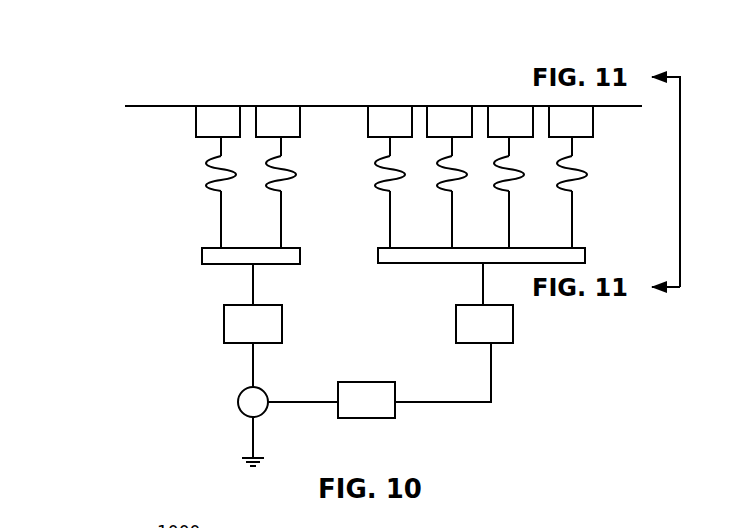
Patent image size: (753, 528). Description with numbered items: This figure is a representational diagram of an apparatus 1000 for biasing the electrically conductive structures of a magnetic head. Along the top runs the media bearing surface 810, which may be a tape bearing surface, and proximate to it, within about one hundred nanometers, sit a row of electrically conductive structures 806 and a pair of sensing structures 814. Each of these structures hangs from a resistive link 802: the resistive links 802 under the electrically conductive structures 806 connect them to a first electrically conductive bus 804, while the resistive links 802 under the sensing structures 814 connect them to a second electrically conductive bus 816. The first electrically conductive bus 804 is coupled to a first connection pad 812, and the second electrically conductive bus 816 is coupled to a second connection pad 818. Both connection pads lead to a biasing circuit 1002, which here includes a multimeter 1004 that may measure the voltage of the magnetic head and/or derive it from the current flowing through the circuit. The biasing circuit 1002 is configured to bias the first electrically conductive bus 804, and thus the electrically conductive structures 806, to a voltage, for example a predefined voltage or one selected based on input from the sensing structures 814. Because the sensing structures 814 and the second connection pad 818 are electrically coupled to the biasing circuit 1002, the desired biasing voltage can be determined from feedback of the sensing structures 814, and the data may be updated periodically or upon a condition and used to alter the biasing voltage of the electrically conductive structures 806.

The apparatus 1000 is at (90, 73).
The media bearing surface 810 is at (335, 104).
The sensing structure 814 is at (267, 105).
The electrically conductive structures 806 is at (558, 105).
The resistive links 802 is at (252, 183).
The second electrically conductive bus 816 is at (202, 255).
The first electrically conductive bus 804 is at (378, 255).
The second connection pad 818 is at (224, 323).
The first connection pad 812 is at (456, 327).
The multimeter 1004 is at (238, 402).
The biasing circuit 1002 is at (362, 418).